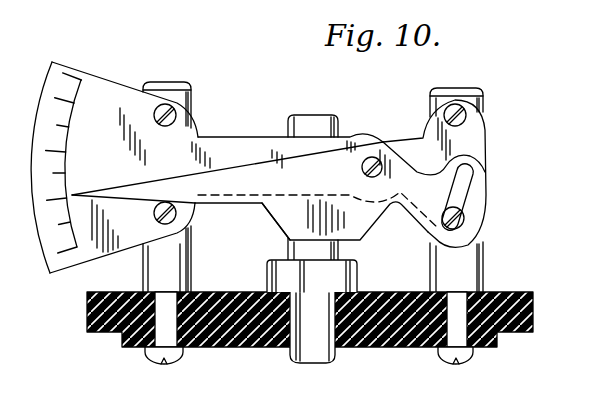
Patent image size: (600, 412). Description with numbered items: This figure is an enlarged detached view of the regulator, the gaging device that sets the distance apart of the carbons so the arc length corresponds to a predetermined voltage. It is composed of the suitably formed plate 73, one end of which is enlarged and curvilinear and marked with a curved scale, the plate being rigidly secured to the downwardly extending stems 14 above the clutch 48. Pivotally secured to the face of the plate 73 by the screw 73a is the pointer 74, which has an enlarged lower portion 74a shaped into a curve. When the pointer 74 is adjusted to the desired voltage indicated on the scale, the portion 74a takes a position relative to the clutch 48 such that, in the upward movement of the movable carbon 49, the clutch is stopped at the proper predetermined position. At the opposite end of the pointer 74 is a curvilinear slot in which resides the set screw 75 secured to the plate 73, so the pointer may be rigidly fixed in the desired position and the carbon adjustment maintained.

The stems 14 is at (192, 263).
The clutch 48 is at (360, 274).
The movable carbon 49 is at (298, 352).
The plate 73 is at (233, 142).
The screw 73a is at (378, 157).
The pointer 74 is at (234, 167).
The enlarged lower portion 74a is at (307, 228).
The set screw 75 is at (463, 207).